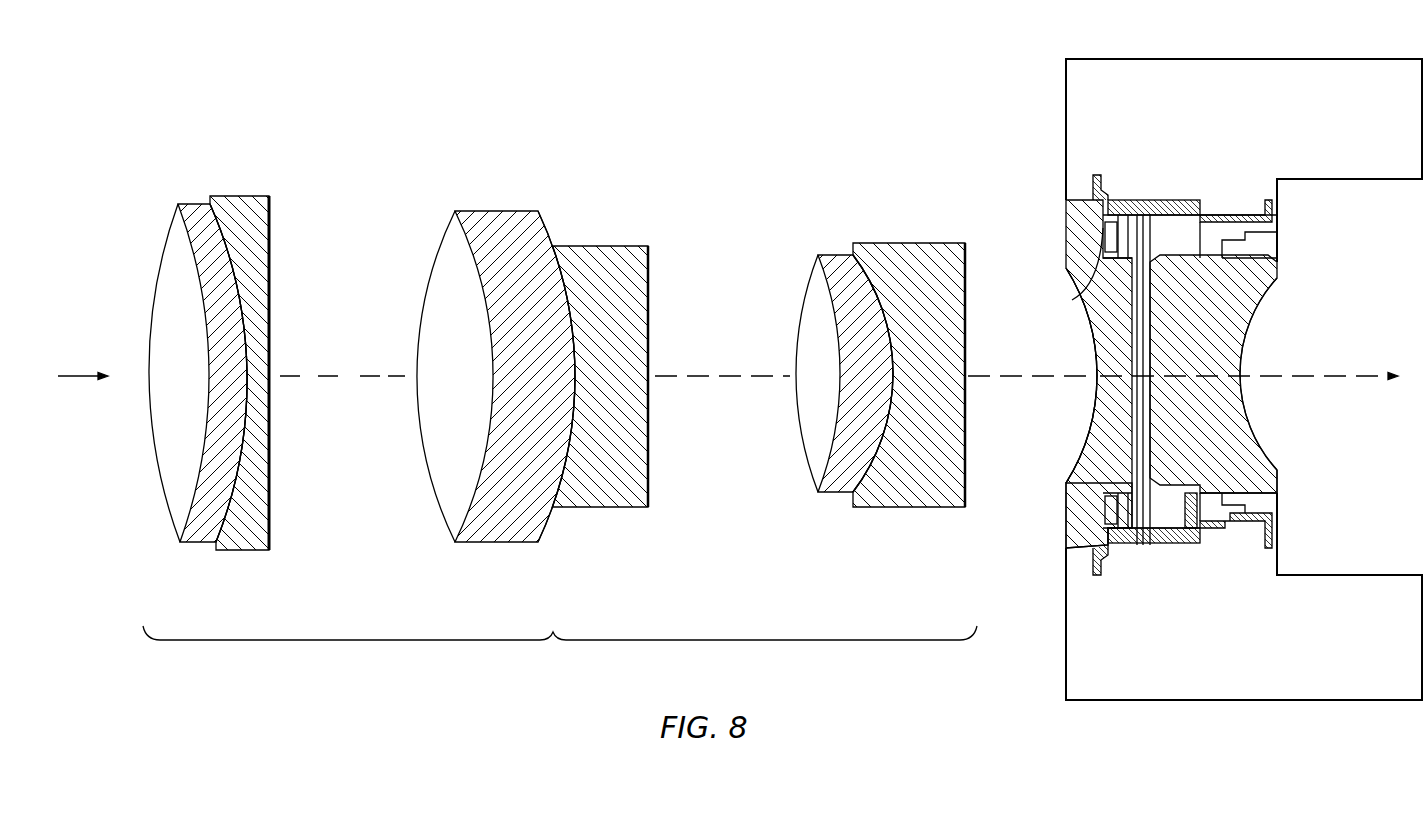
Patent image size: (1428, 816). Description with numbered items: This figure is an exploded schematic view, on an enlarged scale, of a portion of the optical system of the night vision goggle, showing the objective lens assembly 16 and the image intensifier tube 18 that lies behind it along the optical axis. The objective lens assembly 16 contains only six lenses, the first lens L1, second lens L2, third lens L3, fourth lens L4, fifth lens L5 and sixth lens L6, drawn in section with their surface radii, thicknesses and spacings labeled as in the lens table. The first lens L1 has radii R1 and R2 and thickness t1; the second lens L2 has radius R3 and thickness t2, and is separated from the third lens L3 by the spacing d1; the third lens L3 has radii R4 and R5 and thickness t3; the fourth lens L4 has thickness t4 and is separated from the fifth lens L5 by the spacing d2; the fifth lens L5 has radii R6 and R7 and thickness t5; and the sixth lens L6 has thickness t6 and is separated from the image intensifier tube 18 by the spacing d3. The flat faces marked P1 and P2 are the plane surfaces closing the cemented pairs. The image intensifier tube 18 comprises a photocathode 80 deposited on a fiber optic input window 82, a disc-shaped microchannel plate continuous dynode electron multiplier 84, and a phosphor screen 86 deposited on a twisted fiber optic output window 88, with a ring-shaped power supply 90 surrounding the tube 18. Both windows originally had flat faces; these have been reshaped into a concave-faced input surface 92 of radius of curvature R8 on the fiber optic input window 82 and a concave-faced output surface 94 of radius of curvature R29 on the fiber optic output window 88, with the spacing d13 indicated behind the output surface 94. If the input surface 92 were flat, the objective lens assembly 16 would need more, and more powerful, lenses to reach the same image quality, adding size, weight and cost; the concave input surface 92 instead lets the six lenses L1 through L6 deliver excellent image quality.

The objective lens assembly 16 is at (560, 652).
The image intensifier tube 18 is at (1058, 598).
The first lens L1 is at (197, 545).
The second lens L2 is at (252, 553).
The third lens L3 is at (502, 545).
The fourth lens L4 is at (604, 510).
The fifth lens L5 is at (832, 495).
The sixth lens L6 is at (927, 510).
The radius of curvature R1 is at (152, 333).
The radius of curvature R2 is at (245, 408).
The radius of curvature R3 is at (269, 484).
The radius of curvature R4 is at (446, 486).
The radius of curvature R5 is at (576, 385).
The radius of curvature R6 is at (798, 400).
The radius of curvature R7 is at (893, 356).
The radius of curvature R8 is at (1088, 447).
The radius of curvature R29 is at (1253, 311).
The thickness t1 is at (247, 376).
The thickness t2 is at (247, 376).
The thickness t3 is at (575, 376).
The thickness t4 is at (575, 376).
The thickness t5 is at (895, 376).
The thickness t6 is at (895, 376).
The spacing d1 is at (417, 376).
The spacing d2 is at (648, 376).
The spacing d3 is at (1097, 376).
The spacing d13 is at (1325, 376).
The first plane surface P1 is at (650, 320).
The second plane surface P2 is at (966, 308).
The photocathode 80 is at (1088, 245).
The fiber optic input window 82 is at (1080, 535).
The microchannel plate continuous dynode electron multiplier 84 is at (1150, 258).
The phosphor screen 86 is at (1222, 500).
The twisted fiber optic output window 88 is at (1278, 482).
The ring-shaped power supply 90 is at (1398, 664).
The concave-faced input surface 92 is at (1090, 322).
The concave-faced output surface 94 is at (1242, 350).